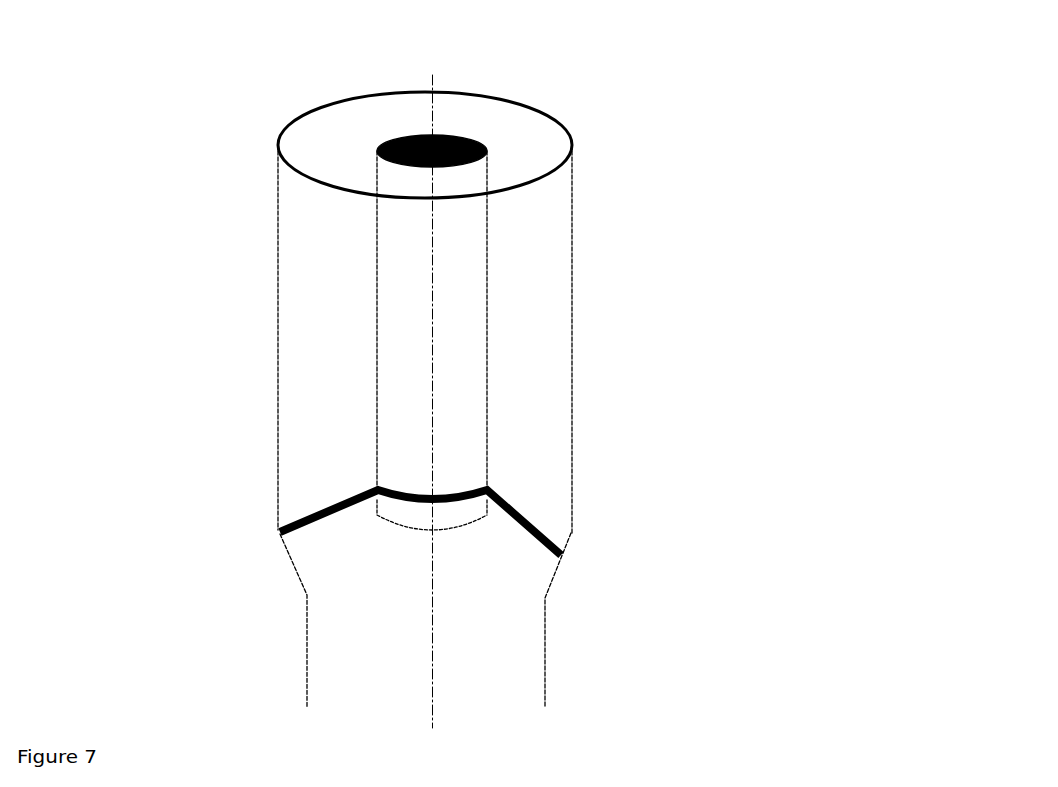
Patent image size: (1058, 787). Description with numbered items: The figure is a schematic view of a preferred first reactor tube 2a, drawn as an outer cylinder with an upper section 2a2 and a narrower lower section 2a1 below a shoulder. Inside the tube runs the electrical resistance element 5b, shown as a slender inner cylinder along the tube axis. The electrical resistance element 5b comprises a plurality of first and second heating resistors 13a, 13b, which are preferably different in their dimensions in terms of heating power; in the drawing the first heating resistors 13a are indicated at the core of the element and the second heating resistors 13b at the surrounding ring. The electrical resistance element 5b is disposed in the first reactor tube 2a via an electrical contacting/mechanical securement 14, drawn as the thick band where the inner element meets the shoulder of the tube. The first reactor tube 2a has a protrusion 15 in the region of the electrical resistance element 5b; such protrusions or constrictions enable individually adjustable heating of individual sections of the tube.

The first heating resistor 13a is at (428, 137).
The second heating resistor 13b is at (383, 138).
The electrical resistance element 5b is at (485, 332).
The first reactor tube 2a is at (506, 426).
The lower sheath section 2a1 is at (305, 648).
The upper sheath section 2a2 is at (268, 397).
The electrical contacting/mechanical securement 14 is at (560, 537).
The protrusion 15 is at (572, 404).